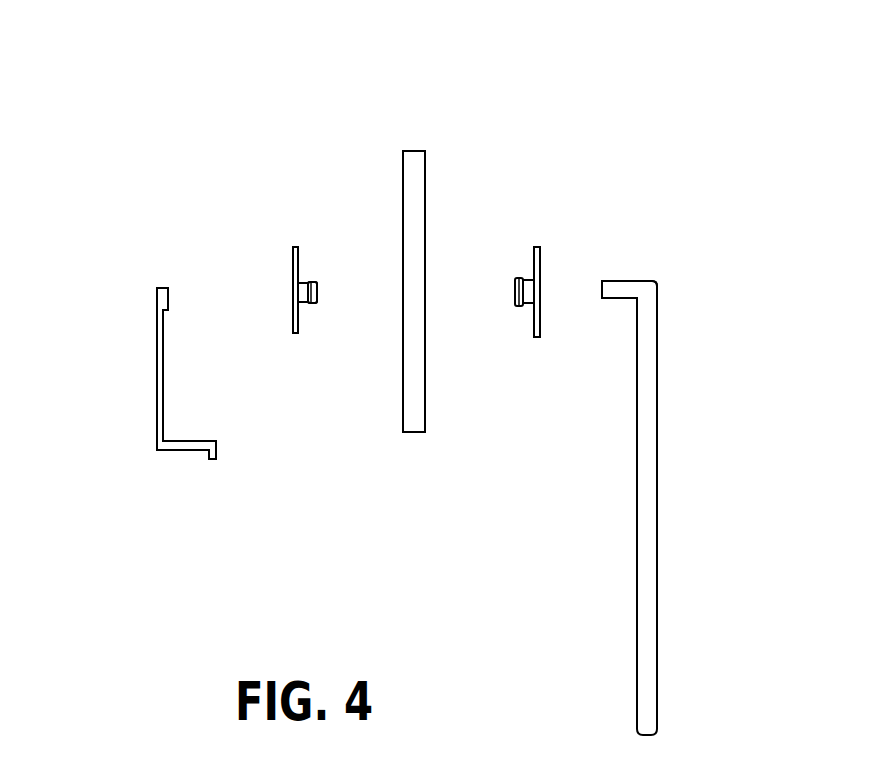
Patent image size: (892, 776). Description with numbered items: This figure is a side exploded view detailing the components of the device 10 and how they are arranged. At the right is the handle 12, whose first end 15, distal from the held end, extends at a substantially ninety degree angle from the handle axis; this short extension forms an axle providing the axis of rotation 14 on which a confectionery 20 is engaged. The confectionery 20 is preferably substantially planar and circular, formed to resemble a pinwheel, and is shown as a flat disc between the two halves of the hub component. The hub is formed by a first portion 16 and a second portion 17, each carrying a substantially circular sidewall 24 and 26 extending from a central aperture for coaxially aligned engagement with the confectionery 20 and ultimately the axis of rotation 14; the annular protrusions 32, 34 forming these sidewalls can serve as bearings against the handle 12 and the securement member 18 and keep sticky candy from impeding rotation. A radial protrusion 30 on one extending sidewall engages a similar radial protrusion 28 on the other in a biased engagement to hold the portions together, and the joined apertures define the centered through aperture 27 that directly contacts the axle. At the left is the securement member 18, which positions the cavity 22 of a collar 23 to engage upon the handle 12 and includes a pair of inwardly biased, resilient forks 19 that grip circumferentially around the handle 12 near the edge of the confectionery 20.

The device 10 is at (158, 108).
The handle 12 is at (658, 582).
The axis of rotation 14 is at (630, 287).
The first end 15 is at (602, 282).
The first portion 16 is at (535, 337).
The second portion 17 is at (297, 337).
The securement member 18 is at (157, 363).
The forks 19 is at (216, 460).
The confectionery 20 is at (408, 157).
The cavity 22 is at (168, 293).
The collar 23 is at (160, 288).
The sidewall 24 is at (519, 279).
The sidewall 26 is at (317, 280).
The centered aperture 27 is at (294, 287).
The radial protrusion 28 is at (523, 297).
The radial protrusion 30 is at (313, 302).
The annular protrusion 32 is at (540, 308).
The annular protrusion 34 is at (292, 312).